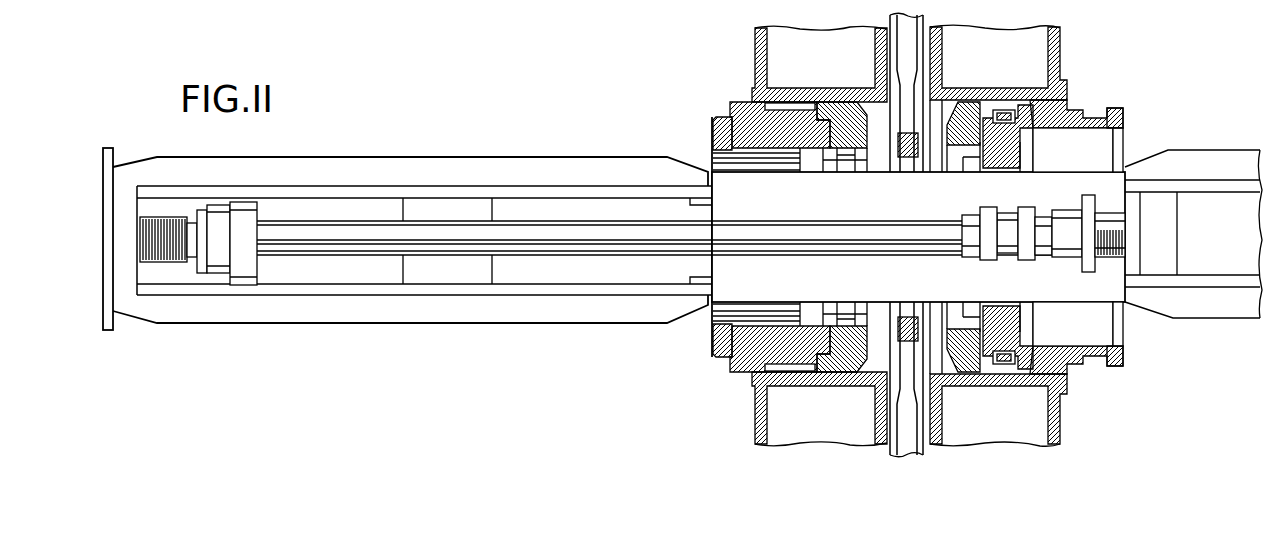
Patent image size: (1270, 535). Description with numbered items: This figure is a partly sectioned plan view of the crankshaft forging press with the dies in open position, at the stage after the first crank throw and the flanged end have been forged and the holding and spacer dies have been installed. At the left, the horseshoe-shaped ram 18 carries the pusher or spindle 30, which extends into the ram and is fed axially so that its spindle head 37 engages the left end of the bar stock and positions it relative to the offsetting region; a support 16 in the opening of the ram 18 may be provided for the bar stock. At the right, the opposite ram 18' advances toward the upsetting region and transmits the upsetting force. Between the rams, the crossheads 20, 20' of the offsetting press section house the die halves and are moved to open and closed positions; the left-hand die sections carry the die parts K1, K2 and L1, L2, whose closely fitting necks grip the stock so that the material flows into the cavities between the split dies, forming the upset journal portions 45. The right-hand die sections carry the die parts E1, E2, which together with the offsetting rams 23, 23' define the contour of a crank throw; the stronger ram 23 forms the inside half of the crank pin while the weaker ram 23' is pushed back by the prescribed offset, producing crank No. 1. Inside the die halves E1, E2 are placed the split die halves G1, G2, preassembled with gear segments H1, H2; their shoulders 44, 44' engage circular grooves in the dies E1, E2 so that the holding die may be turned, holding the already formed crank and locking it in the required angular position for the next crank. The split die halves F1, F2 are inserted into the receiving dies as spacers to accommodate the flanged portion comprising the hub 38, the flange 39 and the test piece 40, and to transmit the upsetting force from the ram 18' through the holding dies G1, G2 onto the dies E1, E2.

The crank No. 1 is at (1002, 217).
The support 16 is at (448, 270).
The ram 18 is at (424, 211).
The ram 18' is at (1193, 222).
The crosshead 20 is at (929, 98).
The crosshead 20' is at (930, 375).
The offsetting ram 23 is at (928, 92).
The offsetting ram 23' is at (931, 379).
The pusher or spindle 30 is at (168, 260).
The spindle head 37 is at (245, 282).
The hub of the flange 38 is at (1067, 238).
The flange 39 is at (1082, 265).
The test piece 40 is at (1117, 238).
The shoulder 44 is at (1008, 117).
The shoulder 44' is at (1008, 359).
The upset journal portions 45 is at (970, 220).
The die part K1 is at (722, 135).
The die part K2 is at (722, 347).
The die part L1 is at (842, 117).
The die part L2 is at (842, 360).
The die part E1 is at (975, 118).
The die part E2 is at (960, 357).
The gear segment H1 is at (1006, 110).
The gear segment H2 is at (1006, 364).
The split die half G1 is at (1070, 100).
The split die half G2 is at (1075, 374).
The split die half F1 is at (1123, 112).
The split die half F2 is at (1124, 358).